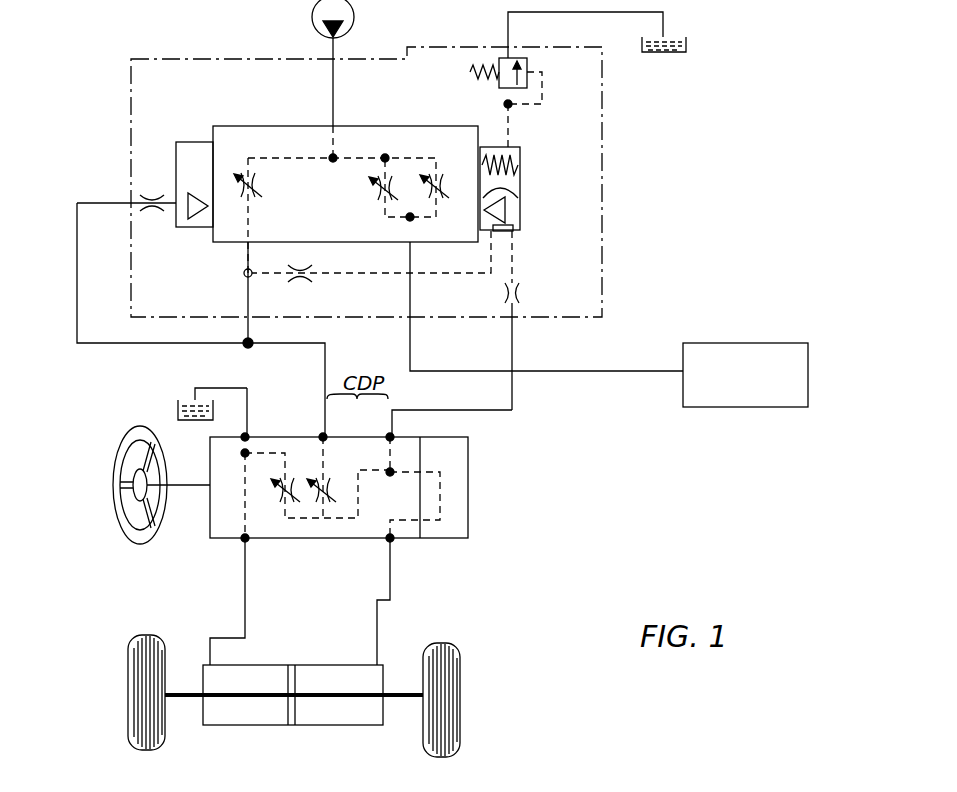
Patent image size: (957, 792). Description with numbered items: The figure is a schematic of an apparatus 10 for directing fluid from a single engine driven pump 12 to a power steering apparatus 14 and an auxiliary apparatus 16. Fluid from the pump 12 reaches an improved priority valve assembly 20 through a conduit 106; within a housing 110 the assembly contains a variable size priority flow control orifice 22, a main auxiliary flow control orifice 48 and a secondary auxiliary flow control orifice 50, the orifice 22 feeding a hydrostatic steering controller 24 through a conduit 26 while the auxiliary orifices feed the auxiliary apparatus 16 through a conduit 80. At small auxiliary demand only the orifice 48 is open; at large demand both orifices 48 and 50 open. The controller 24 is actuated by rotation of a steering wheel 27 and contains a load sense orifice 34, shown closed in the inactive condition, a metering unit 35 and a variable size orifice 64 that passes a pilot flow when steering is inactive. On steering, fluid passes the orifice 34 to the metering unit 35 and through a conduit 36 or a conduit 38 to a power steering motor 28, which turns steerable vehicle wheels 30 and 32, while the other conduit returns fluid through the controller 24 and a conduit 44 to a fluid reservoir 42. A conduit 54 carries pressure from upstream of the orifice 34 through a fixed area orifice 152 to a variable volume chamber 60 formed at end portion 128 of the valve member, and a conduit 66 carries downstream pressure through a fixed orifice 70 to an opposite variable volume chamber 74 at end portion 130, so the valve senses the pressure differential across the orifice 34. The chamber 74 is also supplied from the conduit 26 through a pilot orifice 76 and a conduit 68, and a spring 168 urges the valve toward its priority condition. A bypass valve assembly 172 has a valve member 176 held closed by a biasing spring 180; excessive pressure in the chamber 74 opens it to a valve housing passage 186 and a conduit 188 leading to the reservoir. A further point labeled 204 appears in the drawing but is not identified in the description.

The apparatus 10 is at (104, 46).
The engine driven pump 12 is at (354, 12).
The power steering apparatus 14 is at (455, 595).
The auxiliary apparatus 16 is at (788, 334).
The priority valve assembly 20 is at (578, 126).
The priority flow control orifice 22 is at (262, 183).
The hydrostatic steering controller 24 is at (476, 458).
The conduit 26 is at (253, 333).
The steering wheel 27 is at (140, 428).
The power steering motor 28 is at (280, 726).
The steerable vehicle wheel 30 is at (140, 748).
The steerable vehicle wheel 32 is at (449, 690).
The load sense orifice 34 is at (331, 486).
The metering unit 35 is at (458, 505).
The conduit 36 is at (245, 578).
The conduit 38 is at (390, 582).
The fluid reservoir 42 is at (690, 43).
The conduit 44 is at (242, 388).
The main auxiliary flow control orifice 48 is at (372, 191).
The secondary auxiliary flow control orifice 50 is at (450, 191).
The conduit 54 is at (77, 258).
The variable volume chamber 60 is at (187, 163).
The variable size orifice 64 is at (283, 491).
The conduit 66 is at (513, 400).
The conduit 68 is at (335, 273).
The fixed orifice 70 is at (520, 292).
The variable volume chamber 74 is at (510, 183).
The pilot orifice 76 is at (302, 283).
The conduit 80 is at (620, 371).
The conduit 106 is at (326, 48).
The housing 110 is at (603, 231).
The end portion of valve member 128 is at (213, 148).
The end portion of valve member 130 is at (515, 205).
The fixed area orifice 152 is at (156, 196).
The spring 168 is at (520, 160).
The bypass valve assembly 172 is at (534, 62).
The valve member 176 is at (497, 92).
The biasing spring 180 is at (470, 72).
The valve housing passage 186 is at (506, 55).
The conduit 188 is at (665, 14).
The junction 204 is at (244, 270).